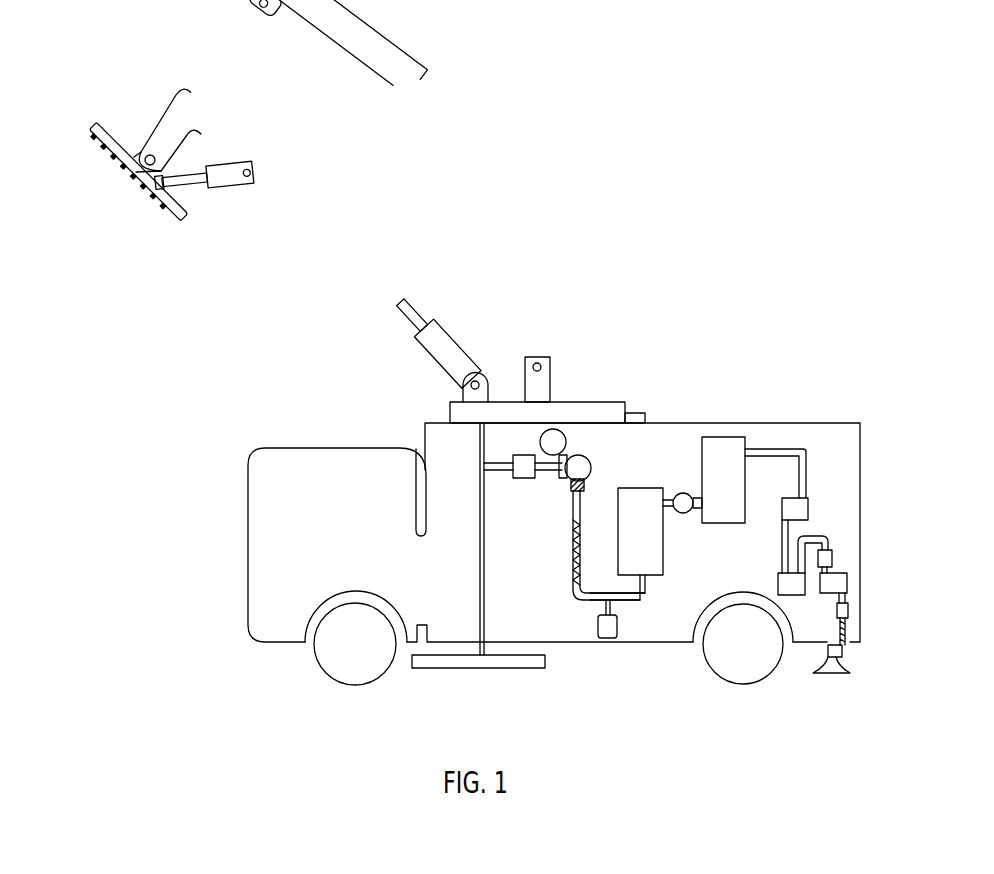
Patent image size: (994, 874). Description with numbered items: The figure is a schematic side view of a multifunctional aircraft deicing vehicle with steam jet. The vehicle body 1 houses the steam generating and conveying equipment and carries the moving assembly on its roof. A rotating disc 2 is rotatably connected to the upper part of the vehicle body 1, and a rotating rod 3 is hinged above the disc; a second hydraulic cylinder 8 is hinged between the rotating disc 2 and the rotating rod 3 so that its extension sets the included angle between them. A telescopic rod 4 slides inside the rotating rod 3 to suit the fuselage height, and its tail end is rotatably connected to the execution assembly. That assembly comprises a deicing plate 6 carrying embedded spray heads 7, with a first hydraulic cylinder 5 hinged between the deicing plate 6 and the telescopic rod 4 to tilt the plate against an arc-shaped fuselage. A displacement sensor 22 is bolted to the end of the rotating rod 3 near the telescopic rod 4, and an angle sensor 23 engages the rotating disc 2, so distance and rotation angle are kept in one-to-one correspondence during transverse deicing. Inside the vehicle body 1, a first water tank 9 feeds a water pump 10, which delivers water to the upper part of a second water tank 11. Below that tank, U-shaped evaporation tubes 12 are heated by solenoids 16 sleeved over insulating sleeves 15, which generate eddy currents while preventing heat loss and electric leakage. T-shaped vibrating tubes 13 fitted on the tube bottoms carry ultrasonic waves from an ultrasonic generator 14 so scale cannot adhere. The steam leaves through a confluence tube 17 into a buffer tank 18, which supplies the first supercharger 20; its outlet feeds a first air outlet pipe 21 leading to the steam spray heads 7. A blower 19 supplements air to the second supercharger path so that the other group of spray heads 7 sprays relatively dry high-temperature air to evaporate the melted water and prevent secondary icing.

The vehicle body 1 is at (358, 553).
The rotating disc 2 is at (553, 410).
The rotating rod 3 is at (517, 365).
The telescopic rod 4 is at (213, 125).
The first hydraulic cylinder 5 is at (220, 178).
The deicing plate 6 is at (140, 170).
The spray heads 7 is at (134, 175).
The second hydraulic cylinder 8 is at (448, 357).
The first water tank 9 is at (730, 485).
The water pump 10 is at (684, 504).
The second water tank 11 is at (661, 573).
The evaporation tubes 12 is at (645, 552).
The vibrating tubes 13 is at (627, 598).
The ultrasonic generator 14 is at (607, 625).
The sleeves 15 is at (578, 592).
The solenoids 16 is at (572, 573).
The confluence tube 17 is at (580, 478).
The buffer tank 18 is at (578, 468).
The blower 19 is at (553, 442).
The first supercharger 20 is at (525, 467).
The first air outlet pipe 21 is at (482, 443).
The displacement sensor 22 is at (303, 164).
The angle sensor 23 is at (638, 418).